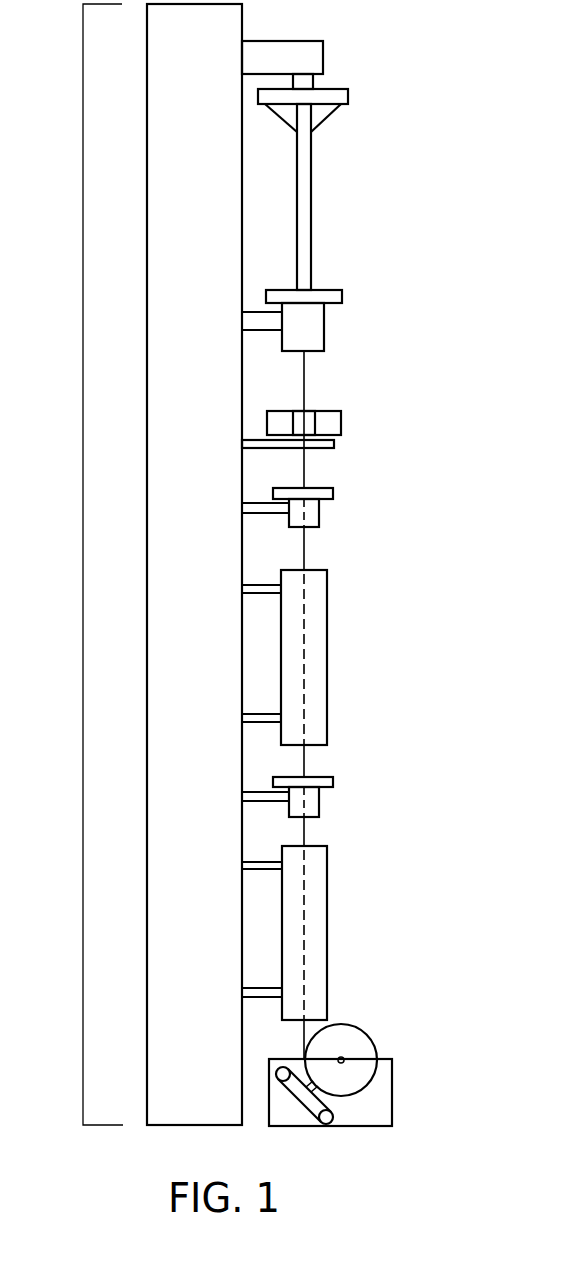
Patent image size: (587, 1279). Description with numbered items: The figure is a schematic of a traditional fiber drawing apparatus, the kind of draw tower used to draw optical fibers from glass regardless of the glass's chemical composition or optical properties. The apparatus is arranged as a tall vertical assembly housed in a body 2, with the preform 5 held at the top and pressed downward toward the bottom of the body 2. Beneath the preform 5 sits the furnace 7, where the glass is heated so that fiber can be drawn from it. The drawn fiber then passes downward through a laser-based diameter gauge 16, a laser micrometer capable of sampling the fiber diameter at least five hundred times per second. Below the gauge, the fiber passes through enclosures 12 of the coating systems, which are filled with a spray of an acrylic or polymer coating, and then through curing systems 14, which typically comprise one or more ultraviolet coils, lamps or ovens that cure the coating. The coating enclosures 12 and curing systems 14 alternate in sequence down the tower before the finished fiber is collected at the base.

The body 2 is at (83, 566).
The preform 5 is at (348, 97).
The furnace 7 is at (324, 312).
The laser-based diameter gauge 16 is at (341, 426).
The enclosures 12 is at (334, 510).
The curing systems 14 is at (327, 640).